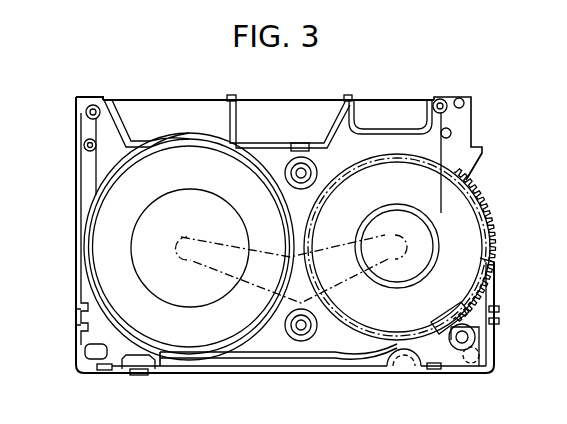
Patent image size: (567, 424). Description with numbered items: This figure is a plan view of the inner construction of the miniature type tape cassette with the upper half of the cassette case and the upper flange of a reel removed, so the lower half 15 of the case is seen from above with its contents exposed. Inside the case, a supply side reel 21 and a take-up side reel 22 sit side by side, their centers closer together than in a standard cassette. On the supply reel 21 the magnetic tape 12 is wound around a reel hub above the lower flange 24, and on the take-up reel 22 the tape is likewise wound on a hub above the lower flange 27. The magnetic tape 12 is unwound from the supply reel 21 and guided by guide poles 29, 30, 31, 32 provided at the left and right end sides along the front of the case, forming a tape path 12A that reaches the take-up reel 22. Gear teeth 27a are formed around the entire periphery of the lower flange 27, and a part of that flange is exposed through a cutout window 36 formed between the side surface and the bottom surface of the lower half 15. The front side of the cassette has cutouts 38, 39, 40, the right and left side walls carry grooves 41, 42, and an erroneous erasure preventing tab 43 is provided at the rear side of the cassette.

The magnetic tape 12 is at (96, 170).
The tape path 12A is at (302, 100).
The lower half 15 is at (278, 368).
The supply side reel 21 is at (88, 290).
The take-up side reel 22 is at (364, 336).
The lower flange 24 is at (88, 247).
The lower flange 27 is at (470, 262).
The gear teeth 27a is at (486, 218).
The guide pole 29 is at (86, 141).
The guide pole 30 is at (92, 104).
The guide pole 31 is at (443, 100).
The guide pole 32 is at (452, 133).
The cutout window 36 is at (468, 167).
The cutout 38 is at (188, 108).
The cutout 39 is at (260, 110).
The cutout 40 is at (378, 113).
The groove 41 is at (495, 312).
The groove 42 is at (80, 320).
The erroneous erasure preventing tab 43 is at (140, 374).